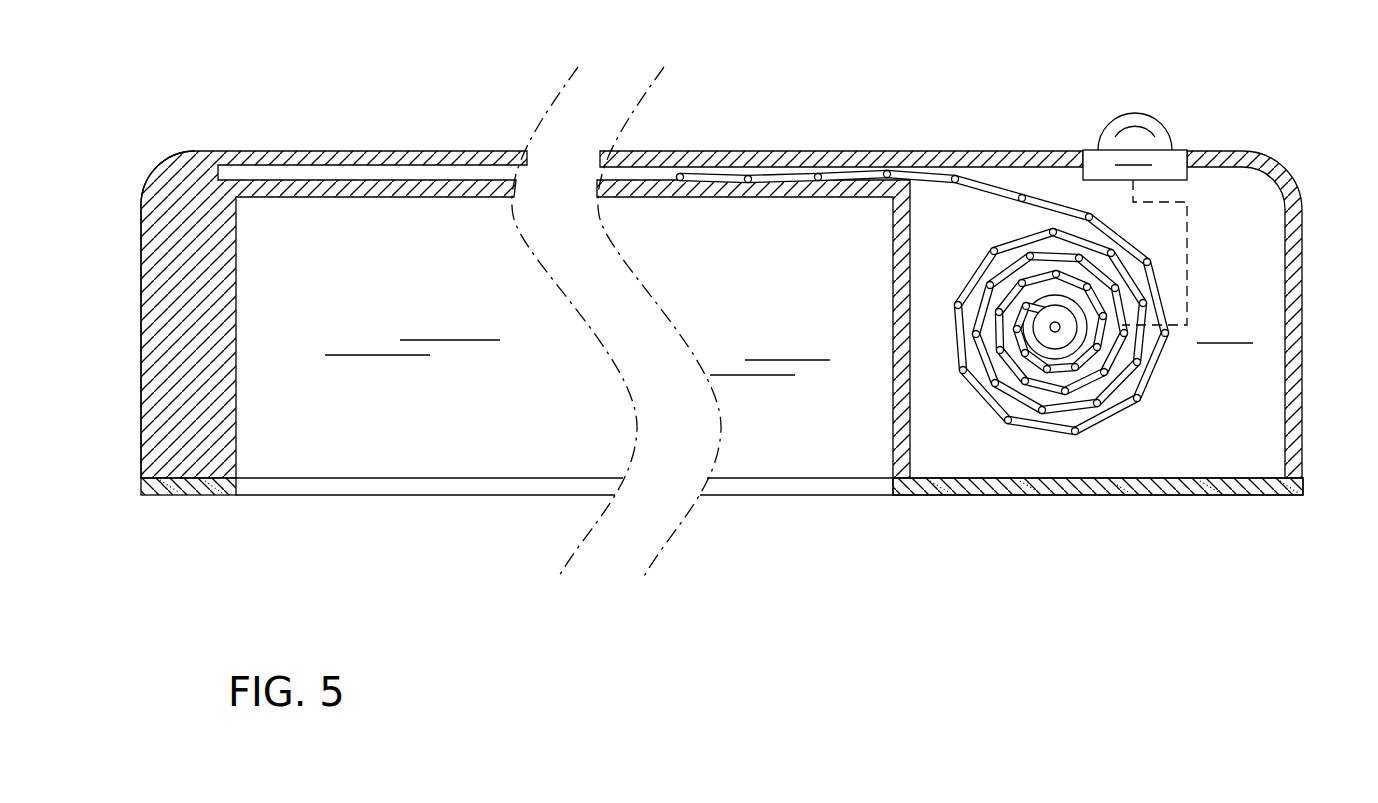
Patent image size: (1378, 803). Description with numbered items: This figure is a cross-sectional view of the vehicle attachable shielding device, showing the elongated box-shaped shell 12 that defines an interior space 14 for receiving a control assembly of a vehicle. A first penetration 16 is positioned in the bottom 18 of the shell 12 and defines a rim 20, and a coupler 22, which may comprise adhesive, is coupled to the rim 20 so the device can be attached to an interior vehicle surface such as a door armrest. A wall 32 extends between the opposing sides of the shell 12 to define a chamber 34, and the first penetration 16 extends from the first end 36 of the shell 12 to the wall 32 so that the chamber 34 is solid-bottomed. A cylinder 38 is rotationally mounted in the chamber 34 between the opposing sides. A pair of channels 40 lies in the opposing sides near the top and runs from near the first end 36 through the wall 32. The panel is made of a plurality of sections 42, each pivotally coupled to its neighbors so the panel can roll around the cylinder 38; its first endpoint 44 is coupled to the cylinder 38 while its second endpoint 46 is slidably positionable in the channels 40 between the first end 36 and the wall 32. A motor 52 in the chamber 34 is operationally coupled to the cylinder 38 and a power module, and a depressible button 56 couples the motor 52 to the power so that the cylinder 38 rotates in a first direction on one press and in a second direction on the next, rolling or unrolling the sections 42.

The shell 12 is at (208, 146).
The interior space 14 is at (447, 412).
The first penetration 16 is at (730, 500).
The bottom 18 is at (1120, 499).
The rim 20 is at (210, 498).
The coupler 22 is at (178, 498).
The wall 32 is at (913, 270).
The chamber 34 is at (1245, 205).
The first end 36 is at (136, 241).
The cylinder 38 is at (1053, 347).
The channels 40 is at (398, 162).
The sections 42 is at (919, 165).
The first endpoint 44 is at (1040, 316).
The second endpoint 46 is at (682, 170).
The motor 52 is at (1069, 359).
The button 56 is at (1158, 108).